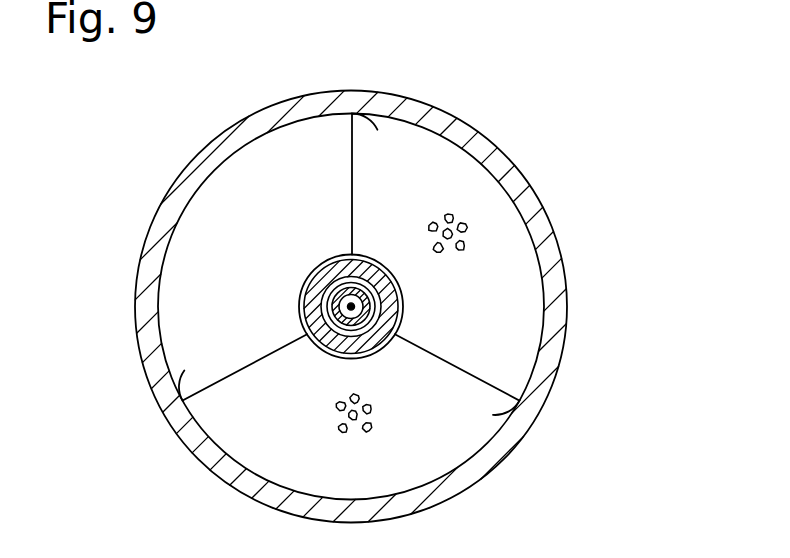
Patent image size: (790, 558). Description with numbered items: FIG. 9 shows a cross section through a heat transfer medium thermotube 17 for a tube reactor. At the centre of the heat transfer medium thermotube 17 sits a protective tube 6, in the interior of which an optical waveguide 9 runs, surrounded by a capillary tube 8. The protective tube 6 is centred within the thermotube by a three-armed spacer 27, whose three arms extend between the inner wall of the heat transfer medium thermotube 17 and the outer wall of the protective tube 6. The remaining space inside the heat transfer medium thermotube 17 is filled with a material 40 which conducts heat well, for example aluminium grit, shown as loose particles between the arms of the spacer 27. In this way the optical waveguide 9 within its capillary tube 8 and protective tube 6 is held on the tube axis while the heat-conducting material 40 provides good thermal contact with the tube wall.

The heat transfer medium thermotube 17 is at (522, 163).
The spacer 27 is at (351, 199).
The protective tube 6 is at (318, 284).
The capillary tube 8 is at (334, 302).
The optical waveguide 9 is at (338, 315).
The material which conducts heat well 40 is at (466, 248).